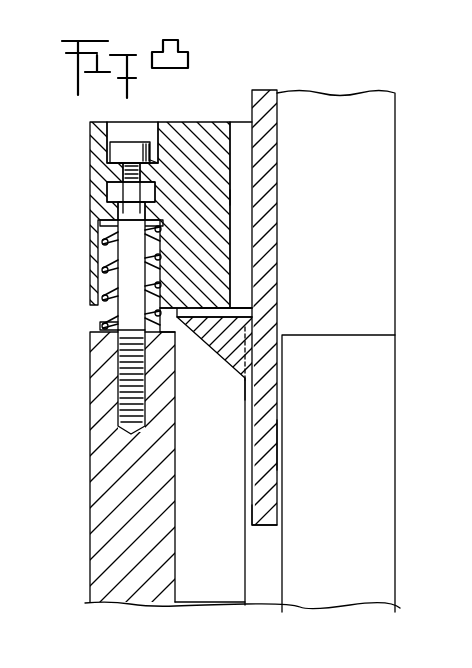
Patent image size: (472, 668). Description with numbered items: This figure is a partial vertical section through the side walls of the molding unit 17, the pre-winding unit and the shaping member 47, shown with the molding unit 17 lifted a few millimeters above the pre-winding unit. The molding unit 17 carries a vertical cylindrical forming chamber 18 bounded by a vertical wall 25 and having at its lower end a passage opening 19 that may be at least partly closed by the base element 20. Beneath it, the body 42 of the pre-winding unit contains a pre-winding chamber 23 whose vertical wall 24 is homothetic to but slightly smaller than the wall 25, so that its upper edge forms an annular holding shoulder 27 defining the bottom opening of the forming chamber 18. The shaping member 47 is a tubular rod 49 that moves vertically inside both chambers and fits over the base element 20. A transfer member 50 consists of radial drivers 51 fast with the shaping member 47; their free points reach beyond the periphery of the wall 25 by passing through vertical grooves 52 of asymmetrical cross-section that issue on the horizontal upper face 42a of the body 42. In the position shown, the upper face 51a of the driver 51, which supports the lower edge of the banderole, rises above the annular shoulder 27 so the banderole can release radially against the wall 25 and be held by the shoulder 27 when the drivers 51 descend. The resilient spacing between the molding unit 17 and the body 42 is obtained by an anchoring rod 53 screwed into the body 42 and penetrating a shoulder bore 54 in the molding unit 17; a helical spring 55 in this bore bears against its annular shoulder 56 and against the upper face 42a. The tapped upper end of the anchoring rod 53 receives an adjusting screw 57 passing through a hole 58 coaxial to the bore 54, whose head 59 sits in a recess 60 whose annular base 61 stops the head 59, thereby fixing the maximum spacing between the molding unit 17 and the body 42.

The molding unit 17 is at (196, 132).
The forming chamber 18 is at (248, 160).
The passage opening 19 is at (245, 306).
The base element 20 is at (365, 406).
The pre-winding chamber 23 is at (250, 520).
The vertical wall 24 is at (252, 488).
The vertical wall 25 is at (231, 197).
The annular holding shoulder 27 is at (255, 317).
The body 42 is at (112, 520).
The upper face 42a is at (186, 332).
The shaping member 47 is at (340, 105).
The tubular rod 49 is at (278, 445).
The transfer member 50 is at (244, 372).
The radial driver 51 is at (262, 362).
The upper face 51a is at (232, 310).
The groove 52 is at (216, 500).
The anchoring rod 53 is at (118, 373).
The shoulder bore 54 is at (105, 292).
The helical spring 55 is at (100, 326).
The annular shoulder 56 is at (100, 224).
The adjusting screw 57 is at (110, 190).
The hole 58 is at (123, 174).
The head 59 is at (112, 150).
The recess 60 is at (146, 134).
The annular base 61 is at (156, 176).